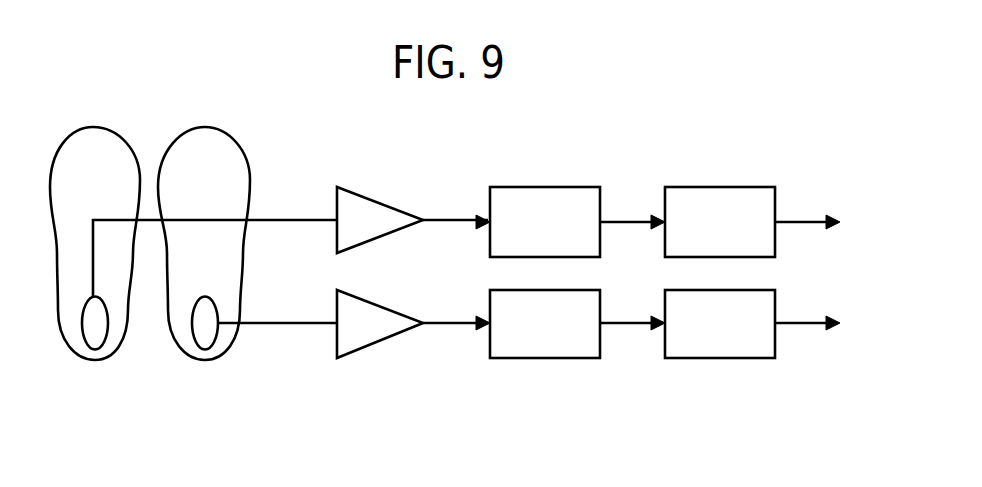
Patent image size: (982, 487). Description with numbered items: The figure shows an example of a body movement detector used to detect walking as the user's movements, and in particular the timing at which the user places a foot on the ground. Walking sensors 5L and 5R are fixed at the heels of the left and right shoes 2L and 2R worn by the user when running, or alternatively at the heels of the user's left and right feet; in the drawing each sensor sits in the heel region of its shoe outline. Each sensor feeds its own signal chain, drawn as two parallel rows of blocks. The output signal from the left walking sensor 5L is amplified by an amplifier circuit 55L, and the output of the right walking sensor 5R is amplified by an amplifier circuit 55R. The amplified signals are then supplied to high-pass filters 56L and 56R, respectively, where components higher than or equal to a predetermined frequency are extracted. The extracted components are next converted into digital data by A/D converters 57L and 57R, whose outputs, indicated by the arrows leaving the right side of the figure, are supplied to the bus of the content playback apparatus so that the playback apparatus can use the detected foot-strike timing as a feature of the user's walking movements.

The left shoe 2L is at (93, 127).
The right shoe 2R is at (203, 127).
The walking sensor 5L is at (95, 335).
The walking sensor 5R is at (205, 335).
The amplifier circuit 55L is at (358, 192).
The amplifier circuit 55R is at (358, 348).
The high-pass filter 56L is at (533, 187).
The high-pass filter 56R is at (533, 358).
The A/D converter 57L is at (710, 187).
The A/D converter 57R is at (685, 358).